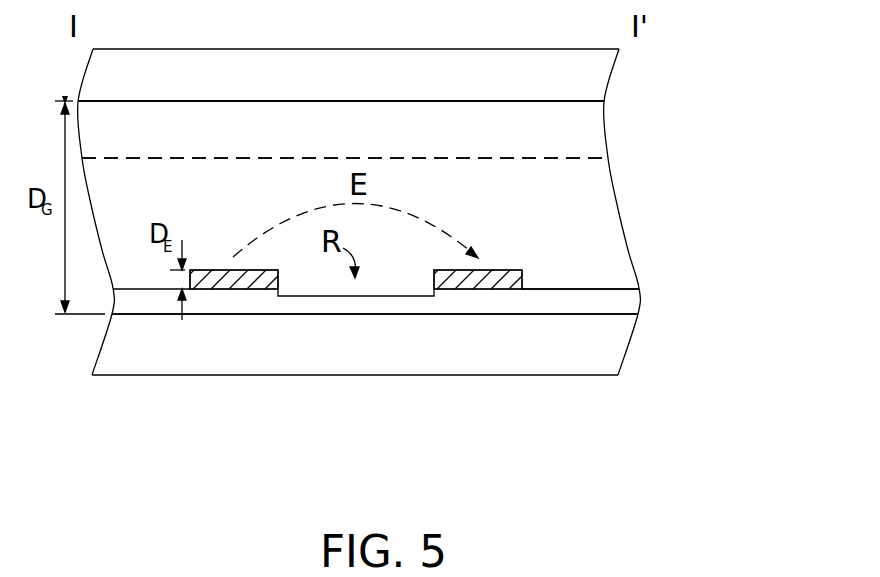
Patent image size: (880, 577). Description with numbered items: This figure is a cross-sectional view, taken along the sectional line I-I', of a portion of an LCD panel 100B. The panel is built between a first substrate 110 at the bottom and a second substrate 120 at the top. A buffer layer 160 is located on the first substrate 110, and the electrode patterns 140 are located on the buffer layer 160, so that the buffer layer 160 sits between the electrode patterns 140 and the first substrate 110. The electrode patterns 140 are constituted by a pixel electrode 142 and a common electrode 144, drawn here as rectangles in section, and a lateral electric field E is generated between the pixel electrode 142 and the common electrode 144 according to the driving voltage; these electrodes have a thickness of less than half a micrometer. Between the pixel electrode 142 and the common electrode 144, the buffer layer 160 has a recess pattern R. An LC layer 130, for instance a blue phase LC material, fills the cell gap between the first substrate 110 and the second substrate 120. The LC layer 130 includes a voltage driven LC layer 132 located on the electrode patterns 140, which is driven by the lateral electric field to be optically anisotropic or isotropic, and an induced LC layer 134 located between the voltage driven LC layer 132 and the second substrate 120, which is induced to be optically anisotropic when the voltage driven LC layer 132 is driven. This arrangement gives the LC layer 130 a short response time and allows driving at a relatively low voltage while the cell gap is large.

The LCD panel 100B is at (621, 485).
The first substrate 110 is at (600, 348).
The second substrate 120 is at (600, 83).
The LC layer 130 is at (699, 121).
The voltage driven LC layer 132 is at (600, 214).
The induced LC layer 134 is at (598, 130).
The electrode patterns 140 is at (478, 421).
The pixel electrode 142 is at (253, 287).
The common electrode 144 is at (448, 287).
The buffer layer 160 is at (600, 302).